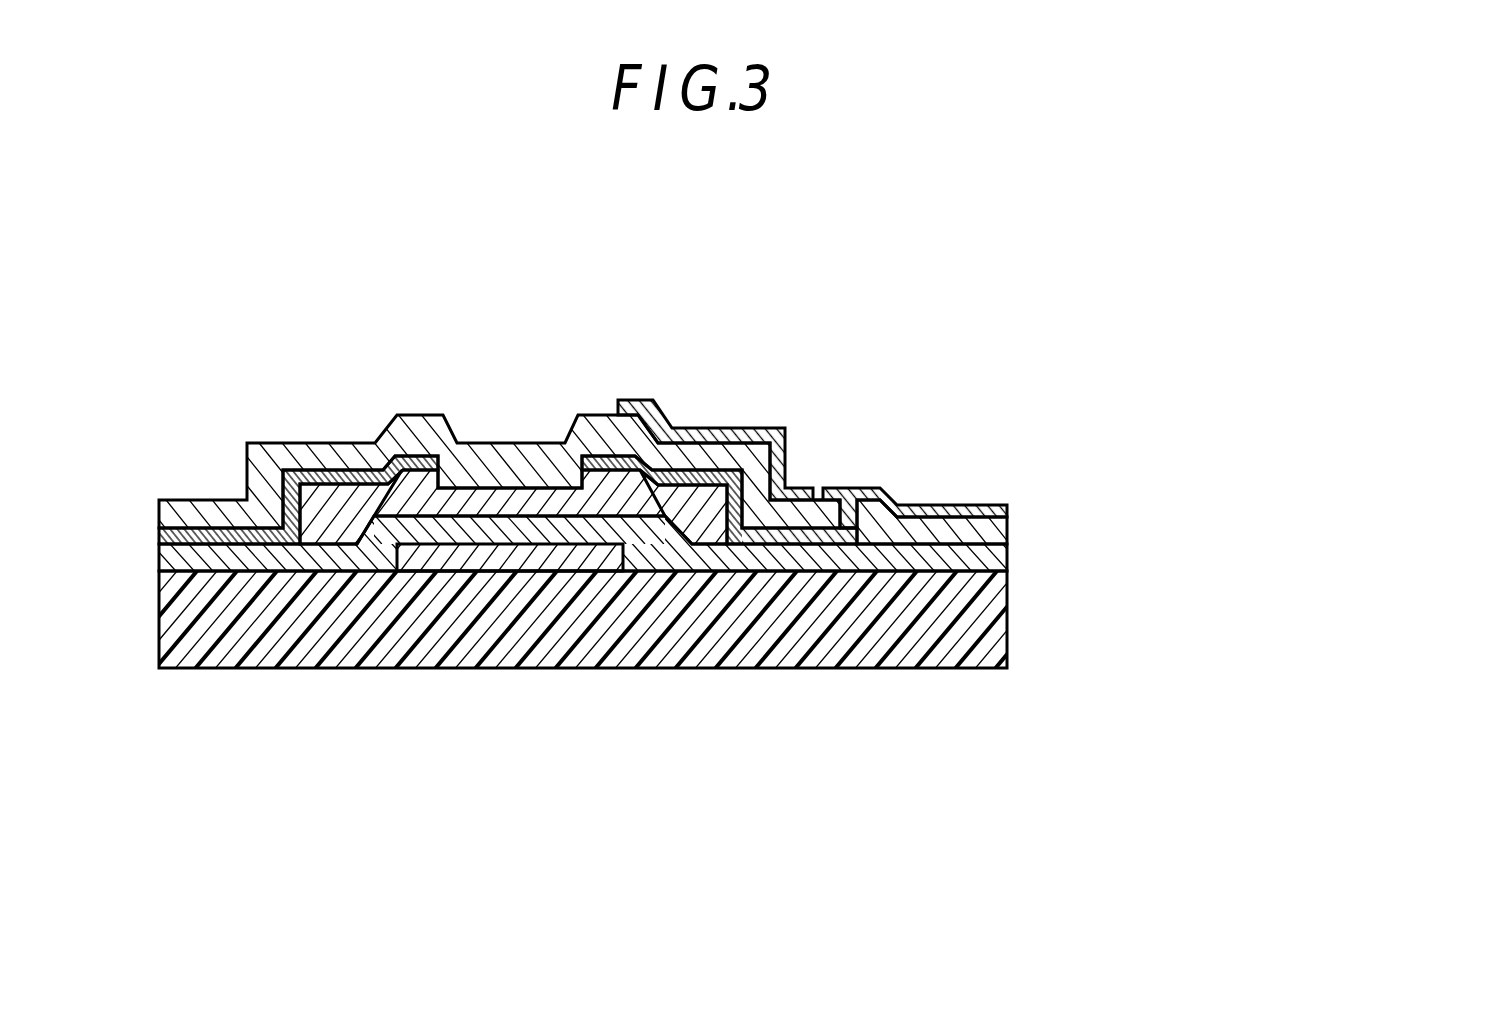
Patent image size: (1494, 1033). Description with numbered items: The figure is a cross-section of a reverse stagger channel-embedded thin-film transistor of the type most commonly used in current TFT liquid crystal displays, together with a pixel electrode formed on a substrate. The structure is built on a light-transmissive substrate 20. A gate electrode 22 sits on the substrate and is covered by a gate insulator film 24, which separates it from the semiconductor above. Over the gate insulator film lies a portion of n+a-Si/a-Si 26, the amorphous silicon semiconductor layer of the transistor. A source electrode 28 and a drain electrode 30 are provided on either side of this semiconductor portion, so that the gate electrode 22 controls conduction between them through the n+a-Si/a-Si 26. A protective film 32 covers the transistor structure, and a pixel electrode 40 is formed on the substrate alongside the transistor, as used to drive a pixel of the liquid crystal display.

The light-transmissive substrate 20 is at (1060, 620).
The gate electrode 22 is at (580, 714).
The gate insulator film 24 is at (1076, 565).
The portion of n+a-Si/a-Si 26 is at (293, 702).
The source electrode 28 is at (266, 537).
The drain electrode 30 is at (1079, 518).
The protective film 32 is at (269, 516).
The pixel electrode 40 is at (752, 427).